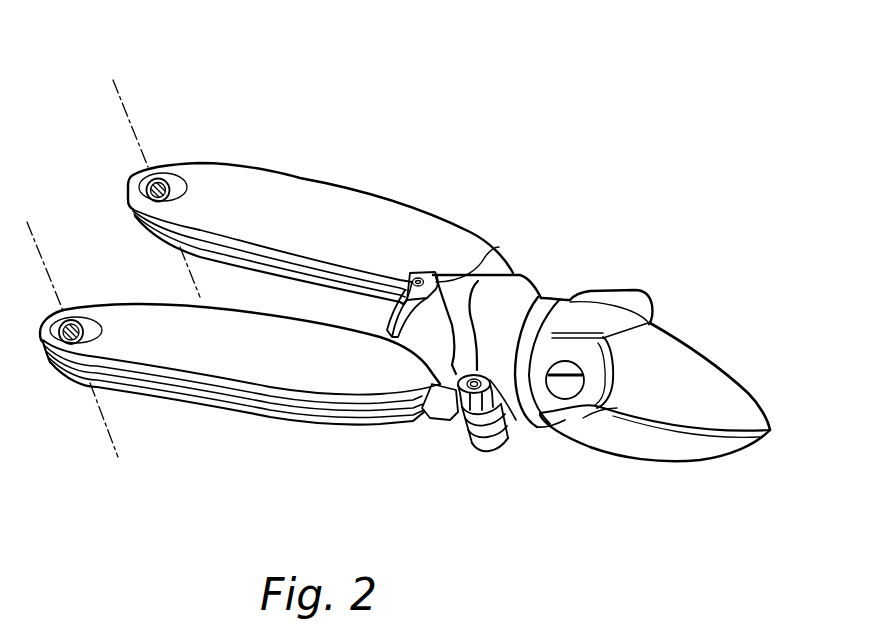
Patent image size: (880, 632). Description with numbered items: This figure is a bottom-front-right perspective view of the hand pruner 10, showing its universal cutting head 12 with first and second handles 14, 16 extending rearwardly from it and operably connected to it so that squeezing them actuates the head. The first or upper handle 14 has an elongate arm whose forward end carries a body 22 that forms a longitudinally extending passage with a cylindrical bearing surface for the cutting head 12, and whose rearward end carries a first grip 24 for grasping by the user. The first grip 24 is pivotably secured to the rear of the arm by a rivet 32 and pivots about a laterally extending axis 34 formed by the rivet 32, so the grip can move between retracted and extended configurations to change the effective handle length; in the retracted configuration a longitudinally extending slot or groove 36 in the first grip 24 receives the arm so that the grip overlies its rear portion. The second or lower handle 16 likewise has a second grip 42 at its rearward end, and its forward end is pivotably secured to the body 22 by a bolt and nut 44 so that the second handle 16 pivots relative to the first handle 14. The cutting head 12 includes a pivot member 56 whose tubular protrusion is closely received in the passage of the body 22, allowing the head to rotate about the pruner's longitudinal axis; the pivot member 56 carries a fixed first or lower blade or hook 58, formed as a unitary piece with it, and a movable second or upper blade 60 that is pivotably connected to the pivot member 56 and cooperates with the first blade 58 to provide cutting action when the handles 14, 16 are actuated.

The hand pruner 10 is at (495, 152).
The universal cutting head 12 is at (631, 286).
The first handle 14 is at (304, 170).
The second handle 16 is at (331, 435).
The body 22 is at (540, 291).
The first grip 24 is at (372, 193).
The rivet 32 is at (170, 182).
The laterally extending axis 34 is at (120, 98).
The slot or groove 36 is at (417, 413).
The second grip 42 is at (233, 421).
The bolt and nut 44 is at (510, 450).
The pivot member 56 is at (601, 294).
The first blade or hook 58 is at (670, 461).
The second blade 60 is at (727, 380).